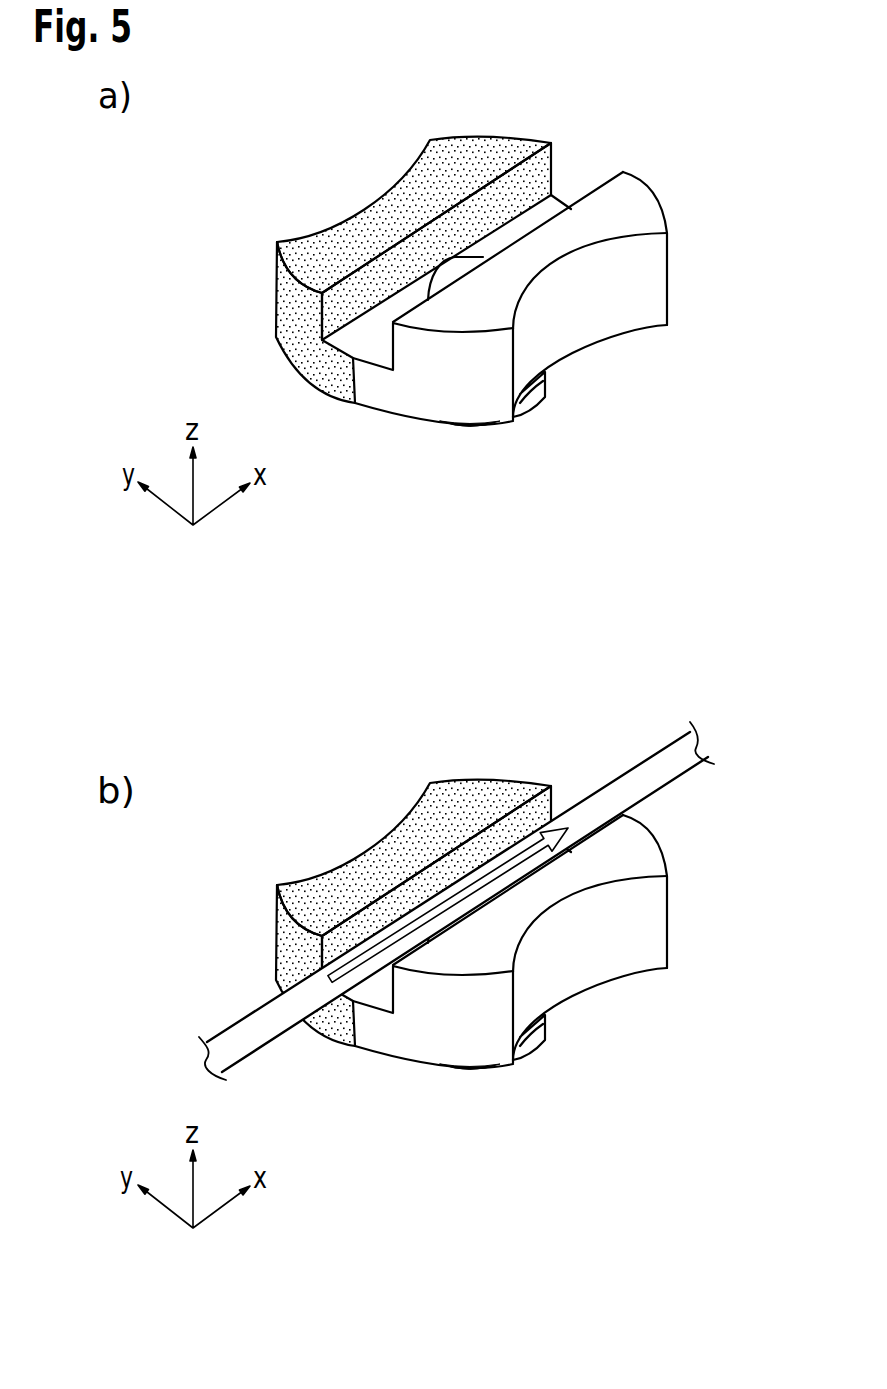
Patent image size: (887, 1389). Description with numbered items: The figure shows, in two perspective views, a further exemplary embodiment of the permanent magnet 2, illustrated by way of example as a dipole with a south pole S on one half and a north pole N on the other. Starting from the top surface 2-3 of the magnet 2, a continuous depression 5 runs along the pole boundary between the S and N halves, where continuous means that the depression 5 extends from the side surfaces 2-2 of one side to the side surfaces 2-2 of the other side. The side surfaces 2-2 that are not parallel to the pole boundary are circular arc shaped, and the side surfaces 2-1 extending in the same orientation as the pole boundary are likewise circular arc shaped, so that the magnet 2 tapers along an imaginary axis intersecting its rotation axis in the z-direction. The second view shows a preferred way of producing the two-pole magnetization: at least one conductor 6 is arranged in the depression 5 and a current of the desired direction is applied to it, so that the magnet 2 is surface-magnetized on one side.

The permanent magnet 2 is at (377, 198).
The side surfaces extending in the same orientation as the pole boundary 2-1 is at (577, 324).
The side surfaces not oriented parallel to the pole boundary 2-2 is at (425, 400).
The top surface 2-3 is at (640, 200).
The depression 5 is at (553, 195).
The conductor 6 is at (642, 778).
The south pole S is at (298, 313).
The north pole N is at (637, 277).